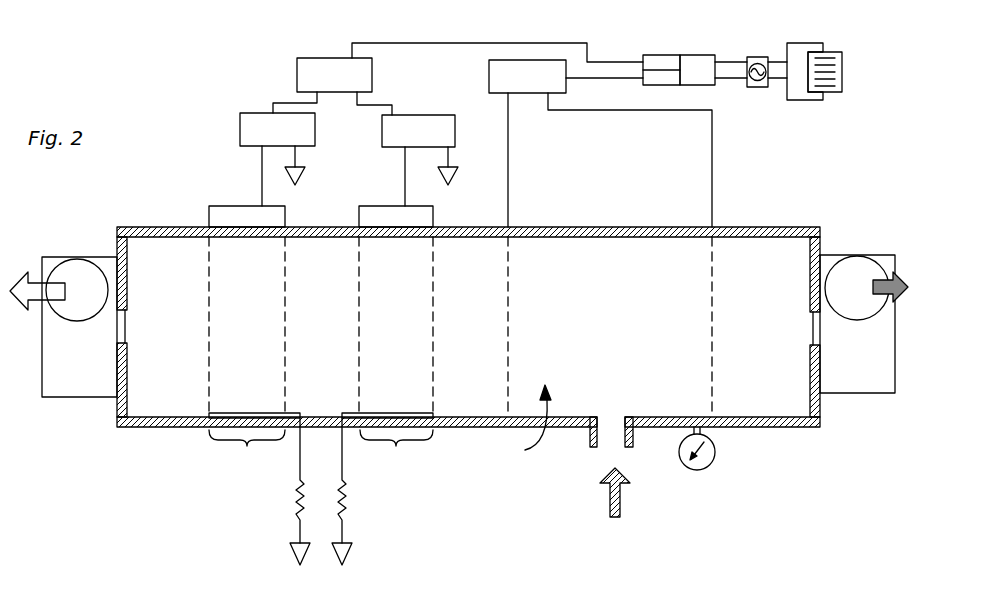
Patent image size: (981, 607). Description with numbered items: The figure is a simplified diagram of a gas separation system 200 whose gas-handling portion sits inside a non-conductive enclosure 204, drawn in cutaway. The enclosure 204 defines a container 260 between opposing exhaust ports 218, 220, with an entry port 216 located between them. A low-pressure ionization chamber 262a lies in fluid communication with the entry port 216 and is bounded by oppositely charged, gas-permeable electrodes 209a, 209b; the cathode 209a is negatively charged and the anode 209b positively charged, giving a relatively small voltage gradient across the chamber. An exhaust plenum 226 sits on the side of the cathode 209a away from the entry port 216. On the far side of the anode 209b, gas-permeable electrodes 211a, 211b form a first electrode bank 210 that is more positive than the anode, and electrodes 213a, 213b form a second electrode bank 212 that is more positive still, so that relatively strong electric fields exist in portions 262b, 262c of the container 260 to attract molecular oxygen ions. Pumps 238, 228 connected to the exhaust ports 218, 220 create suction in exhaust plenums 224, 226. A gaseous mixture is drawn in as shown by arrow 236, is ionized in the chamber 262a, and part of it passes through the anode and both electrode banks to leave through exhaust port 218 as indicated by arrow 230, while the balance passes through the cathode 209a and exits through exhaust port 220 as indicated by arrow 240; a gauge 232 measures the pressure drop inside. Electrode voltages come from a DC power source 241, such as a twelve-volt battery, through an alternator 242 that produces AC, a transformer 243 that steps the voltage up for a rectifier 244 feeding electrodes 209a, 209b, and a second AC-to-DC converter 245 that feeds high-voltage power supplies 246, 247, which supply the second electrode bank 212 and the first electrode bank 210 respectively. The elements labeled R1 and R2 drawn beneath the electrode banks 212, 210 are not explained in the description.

The system 200 is at (189, 50).
The enclosure 204 is at (148, 227).
The electrode 209a is at (715, 287).
The electrode 209b is at (508, 255).
The electrode bank 210 is at (382, 489).
The electrode 211a is at (437, 277).
The electrode 211b is at (360, 255).
The second electrode bank 212 is at (259, 489).
The electrode 213a is at (287, 260).
The electrode 213b is at (208, 258).
The entry port 216 is at (613, 437).
The exhaust port 218 is at (118, 343).
The exhaust port 220 is at (820, 345).
The exhaust plenum 224 is at (190, 326).
The exhaust plenum 226 is at (780, 321).
The pump 228 is at (833, 255).
The arrow 230 is at (40, 295).
The gauge 232 is at (705, 462).
The arrow 236 is at (608, 513).
The pump 238 is at (68, 385).
The arrow 240 is at (885, 257).
The DC power source 241 is at (842, 65).
The alternator 242 is at (748, 57).
The transformer 243 is at (648, 55).
The rectifier 244 is at (489, 70).
The second AC-to-DC converter 245 is at (297, 70).
The high-voltage power supply 246 is at (240, 127).
The high-voltage power supply 247 is at (465, 104).
The container 260 is at (519, 431).
The ionization chamber 262a is at (631, 330).
The portion of container 262b is at (496, 330).
The portion of container 262c is at (346, 330).
The resistor R1 is at (276, 511).
The resistor R2 is at (368, 511).